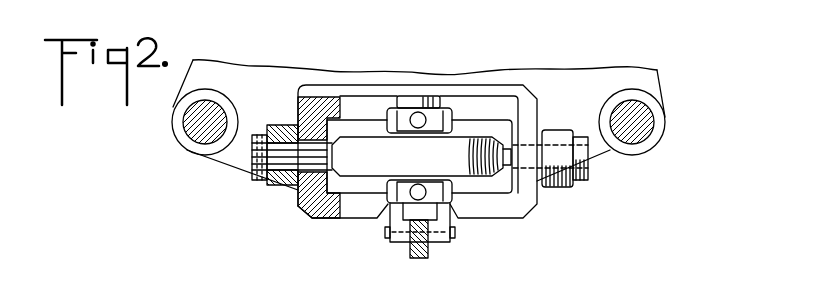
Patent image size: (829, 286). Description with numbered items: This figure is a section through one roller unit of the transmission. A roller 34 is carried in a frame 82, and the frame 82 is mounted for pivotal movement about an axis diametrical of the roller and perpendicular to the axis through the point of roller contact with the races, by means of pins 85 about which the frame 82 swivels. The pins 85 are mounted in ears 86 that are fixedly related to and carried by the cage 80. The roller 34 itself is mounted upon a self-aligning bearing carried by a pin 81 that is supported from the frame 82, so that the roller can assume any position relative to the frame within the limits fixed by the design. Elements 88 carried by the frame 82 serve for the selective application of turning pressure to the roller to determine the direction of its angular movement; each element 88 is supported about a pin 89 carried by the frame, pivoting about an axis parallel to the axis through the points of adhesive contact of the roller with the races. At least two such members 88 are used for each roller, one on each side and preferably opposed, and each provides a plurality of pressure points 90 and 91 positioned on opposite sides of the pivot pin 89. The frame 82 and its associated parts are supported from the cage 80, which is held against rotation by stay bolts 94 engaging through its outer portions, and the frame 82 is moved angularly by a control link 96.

The roller 34 is at (352, 178).
The cage 80 is at (250, 78).
The pin 81 is at (418, 101).
The frame 82 is at (518, 196).
The pin 85 is at (256, 160).
The ear 86 is at (290, 125).
The element 88 is at (438, 117).
The pin 89 is at (418, 186).
The point of pressure application 90 is at (389, 113).
The point of pressure application 91 is at (452, 113).
The stay bolt 94 is at (195, 128).
The link 96 is at (418, 258).